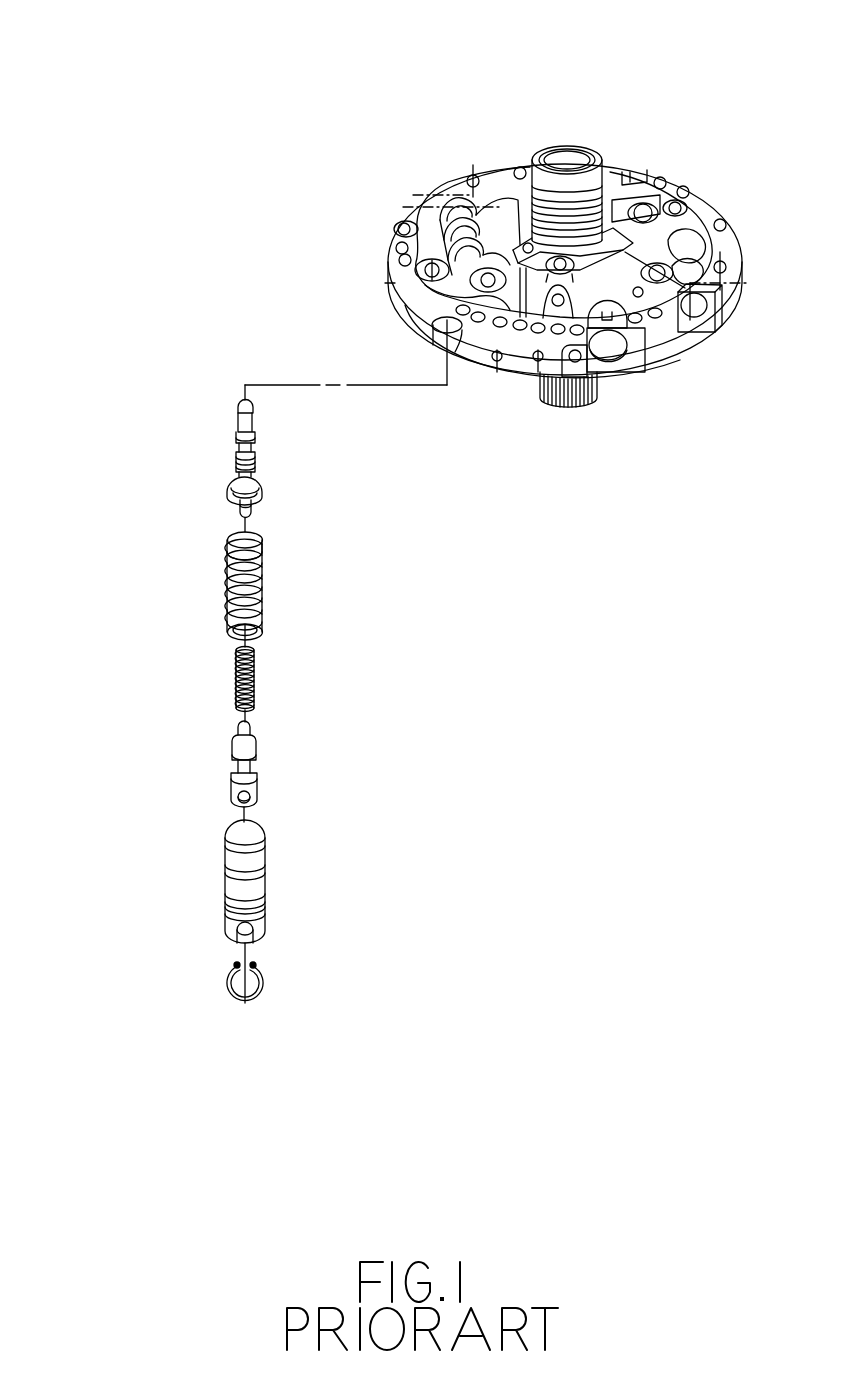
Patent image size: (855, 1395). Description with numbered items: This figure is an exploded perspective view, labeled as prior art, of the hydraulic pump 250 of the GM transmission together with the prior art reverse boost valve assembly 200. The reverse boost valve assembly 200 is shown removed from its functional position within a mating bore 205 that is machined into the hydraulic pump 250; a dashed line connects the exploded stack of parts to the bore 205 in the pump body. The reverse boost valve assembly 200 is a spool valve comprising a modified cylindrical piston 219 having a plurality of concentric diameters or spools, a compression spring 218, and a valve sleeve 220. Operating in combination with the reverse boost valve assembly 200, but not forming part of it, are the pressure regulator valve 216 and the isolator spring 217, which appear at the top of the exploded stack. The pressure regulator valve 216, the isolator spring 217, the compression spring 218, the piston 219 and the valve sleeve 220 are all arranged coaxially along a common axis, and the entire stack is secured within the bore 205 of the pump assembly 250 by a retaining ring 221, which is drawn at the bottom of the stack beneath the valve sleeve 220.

The hydraulic pump 250 is at (657, 90).
The mating bore 205 is at (458, 355).
The reverse boost valve assembly 200 is at (178, 820).
The pressure regulator valve 216 is at (262, 488).
The isolator spring 217 is at (262, 575).
The compression spring 218 is at (255, 665).
The cylindrical piston 219 is at (257, 745).
The valve sleeve 220 is at (265, 872).
The retaining ring 221 is at (265, 967).